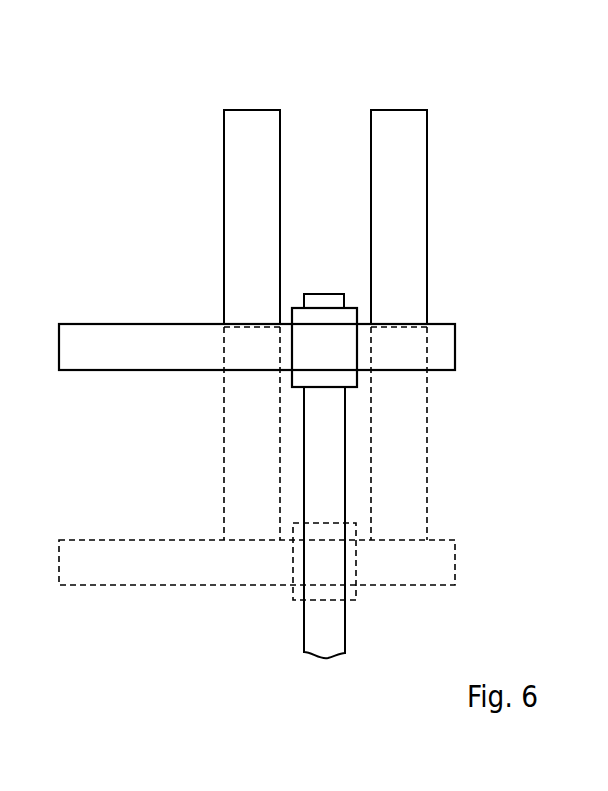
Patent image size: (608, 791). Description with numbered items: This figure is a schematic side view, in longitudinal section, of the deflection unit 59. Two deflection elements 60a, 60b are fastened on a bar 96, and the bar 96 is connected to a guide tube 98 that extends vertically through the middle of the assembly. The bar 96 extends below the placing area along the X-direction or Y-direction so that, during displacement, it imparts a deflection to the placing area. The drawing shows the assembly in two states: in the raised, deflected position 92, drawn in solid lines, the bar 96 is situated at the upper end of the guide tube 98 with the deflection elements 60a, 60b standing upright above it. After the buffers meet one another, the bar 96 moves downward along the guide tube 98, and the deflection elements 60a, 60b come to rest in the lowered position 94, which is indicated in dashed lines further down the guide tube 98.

The deflection unit 59 is at (494, 142).
The raised position 92 is at (446, 97).
The lowered position 94 is at (439, 415).
The bar 96 is at (105, 343).
The guide tube 98 is at (325, 298).
The deflection element 60a is at (250, 123).
The deflection element 60b is at (401, 123).